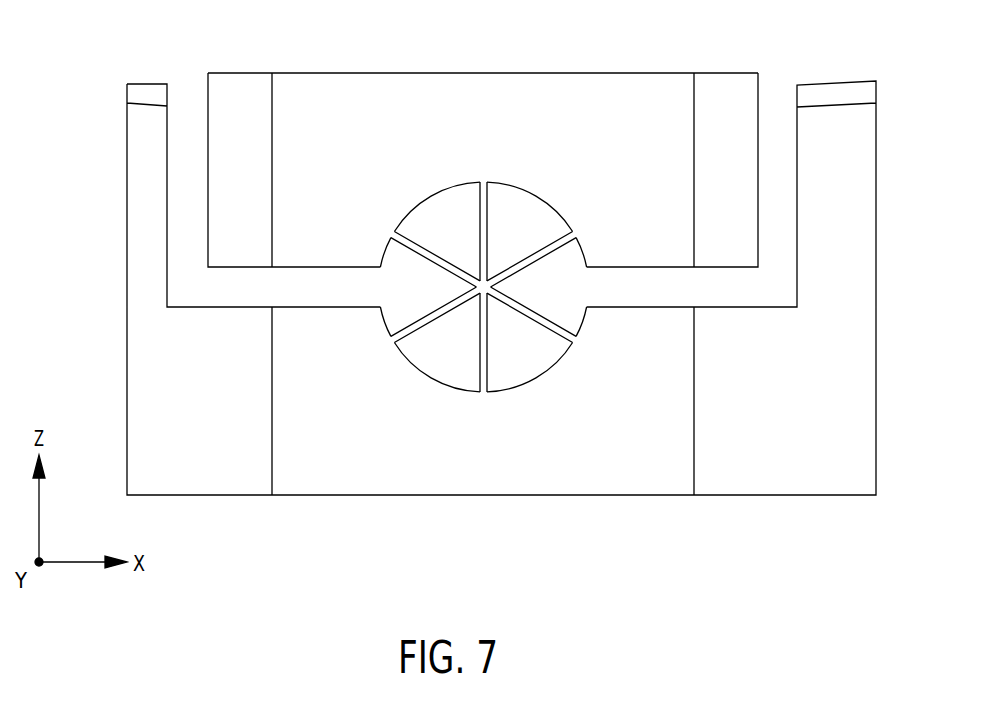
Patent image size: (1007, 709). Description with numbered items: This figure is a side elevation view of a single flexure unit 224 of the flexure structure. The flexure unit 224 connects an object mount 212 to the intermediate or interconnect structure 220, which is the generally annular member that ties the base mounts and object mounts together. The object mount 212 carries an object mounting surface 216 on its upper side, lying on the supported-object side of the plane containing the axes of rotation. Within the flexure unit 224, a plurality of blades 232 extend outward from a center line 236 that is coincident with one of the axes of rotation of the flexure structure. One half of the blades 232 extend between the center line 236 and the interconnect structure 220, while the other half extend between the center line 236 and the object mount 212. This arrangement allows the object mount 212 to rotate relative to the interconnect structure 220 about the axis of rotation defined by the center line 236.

The object mount 212 is at (364, 80).
The object mounting surface 216 is at (480, 72).
The interconnect structure 220 is at (863, 383).
The flexure unit 224 is at (488, 205).
The blade 232 is at (478, 380).
The center line 236 is at (478, 286).